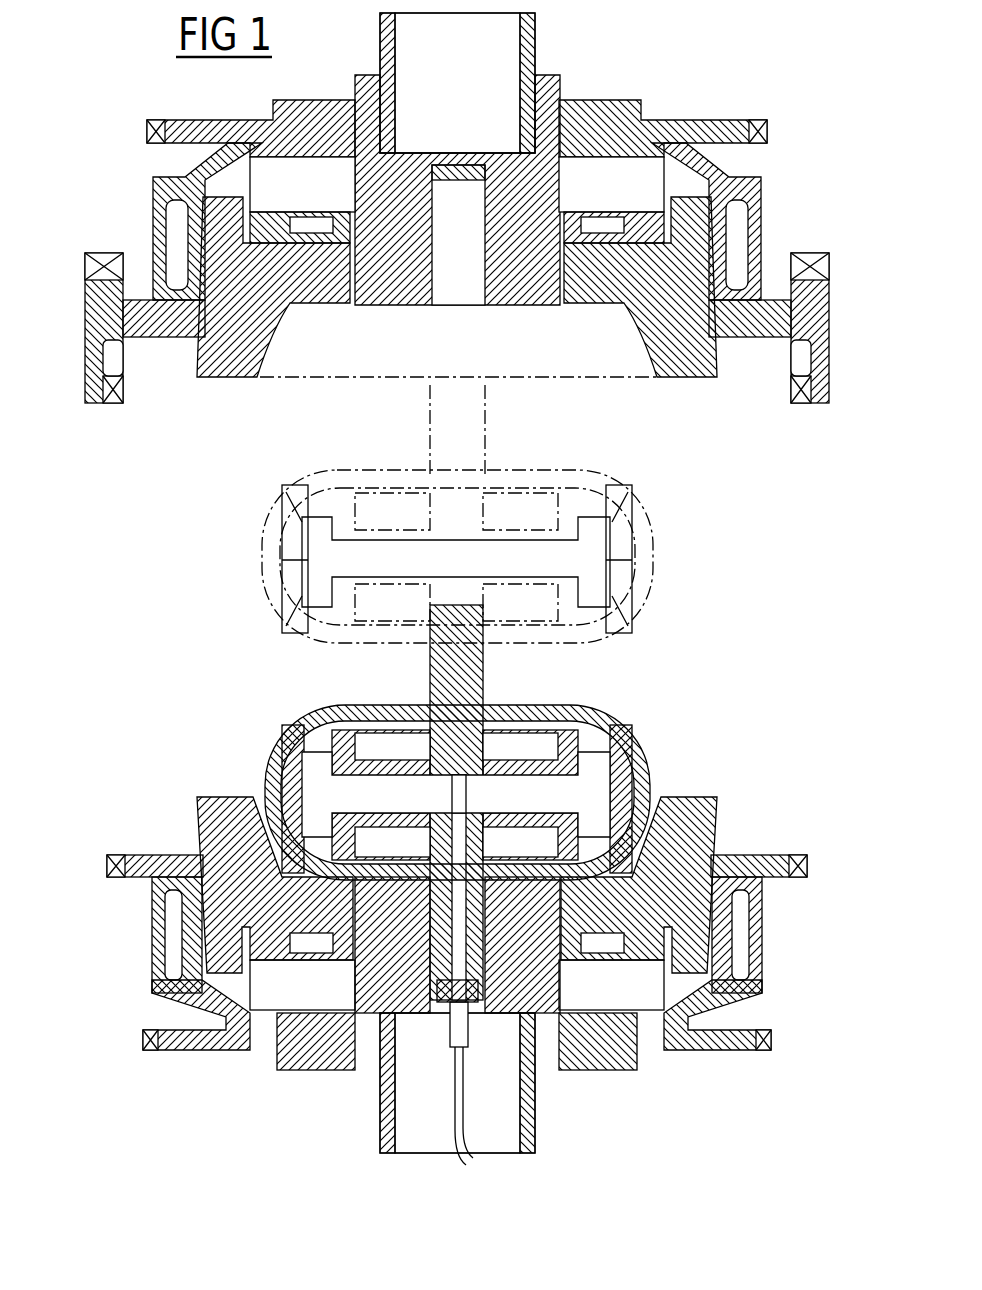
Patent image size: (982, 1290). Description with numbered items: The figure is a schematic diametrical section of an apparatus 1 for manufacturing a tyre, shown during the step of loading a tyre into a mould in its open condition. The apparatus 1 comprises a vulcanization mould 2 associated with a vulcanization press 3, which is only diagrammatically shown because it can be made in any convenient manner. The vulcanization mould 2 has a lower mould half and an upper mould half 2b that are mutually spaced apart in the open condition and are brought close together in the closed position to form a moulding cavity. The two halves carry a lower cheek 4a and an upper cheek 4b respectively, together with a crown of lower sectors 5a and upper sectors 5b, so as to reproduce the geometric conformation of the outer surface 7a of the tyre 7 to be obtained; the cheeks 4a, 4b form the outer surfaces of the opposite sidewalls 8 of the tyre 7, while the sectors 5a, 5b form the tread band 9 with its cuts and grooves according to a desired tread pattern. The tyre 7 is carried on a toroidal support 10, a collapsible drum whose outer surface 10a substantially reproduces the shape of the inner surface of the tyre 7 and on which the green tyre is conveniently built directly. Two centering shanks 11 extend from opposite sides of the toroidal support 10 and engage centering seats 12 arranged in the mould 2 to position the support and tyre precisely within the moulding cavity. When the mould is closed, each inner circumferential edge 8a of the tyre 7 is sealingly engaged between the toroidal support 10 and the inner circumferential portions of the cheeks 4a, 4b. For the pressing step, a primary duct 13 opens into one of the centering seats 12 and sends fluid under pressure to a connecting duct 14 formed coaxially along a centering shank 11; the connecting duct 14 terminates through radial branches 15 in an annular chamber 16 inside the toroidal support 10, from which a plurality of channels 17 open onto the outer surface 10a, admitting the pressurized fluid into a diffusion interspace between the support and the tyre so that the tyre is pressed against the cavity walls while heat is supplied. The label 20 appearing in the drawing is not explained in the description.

The apparatus for manufacturing a tyre 1 is at (130, 1110).
The vulcanization mould 2 is at (214, 396).
The upper mould half 2b is at (745, 392).
The vulcanization press 3 is at (131, 818).
The lower cheek 4a is at (322, 880).
The upper cheek 4b is at (327, 275).
The lower sectors 5a is at (690, 792).
The upper sectors 5b is at (677, 368).
The tyre 7 is at (662, 543).
The outer surface of the tyre 7a is at (268, 775).
The sidewalls 8 is at (612, 720).
The inner circumferential edges 8a is at (572, 725).
The tread band 9 is at (668, 790).
The toroidal support 10 is at (590, 465).
The outer surface of the toroidal support 10a is at (279, 724).
The centering shank 11 is at (483, 662).
The centering seat 12 is at (462, 312).
The primary duct 13 is at (463, 1133).
The connecting duct 14 is at (455, 850).
The branches 15 is at (507, 797).
The annular chamber 16 is at (585, 722).
The channels 17 is at (318, 735).
The motor module 20 is at (748, 780).